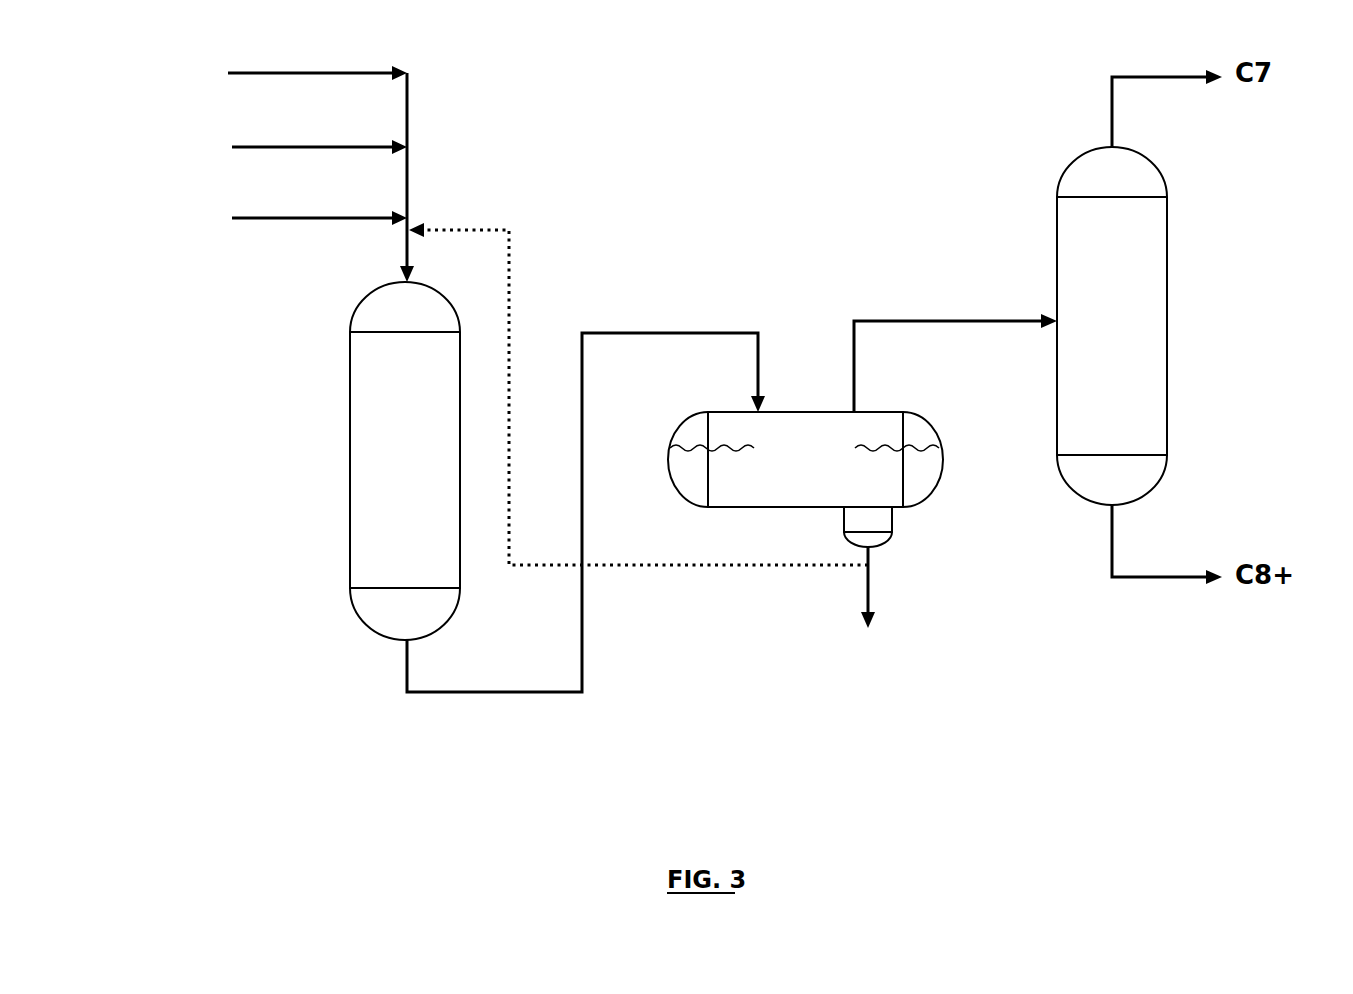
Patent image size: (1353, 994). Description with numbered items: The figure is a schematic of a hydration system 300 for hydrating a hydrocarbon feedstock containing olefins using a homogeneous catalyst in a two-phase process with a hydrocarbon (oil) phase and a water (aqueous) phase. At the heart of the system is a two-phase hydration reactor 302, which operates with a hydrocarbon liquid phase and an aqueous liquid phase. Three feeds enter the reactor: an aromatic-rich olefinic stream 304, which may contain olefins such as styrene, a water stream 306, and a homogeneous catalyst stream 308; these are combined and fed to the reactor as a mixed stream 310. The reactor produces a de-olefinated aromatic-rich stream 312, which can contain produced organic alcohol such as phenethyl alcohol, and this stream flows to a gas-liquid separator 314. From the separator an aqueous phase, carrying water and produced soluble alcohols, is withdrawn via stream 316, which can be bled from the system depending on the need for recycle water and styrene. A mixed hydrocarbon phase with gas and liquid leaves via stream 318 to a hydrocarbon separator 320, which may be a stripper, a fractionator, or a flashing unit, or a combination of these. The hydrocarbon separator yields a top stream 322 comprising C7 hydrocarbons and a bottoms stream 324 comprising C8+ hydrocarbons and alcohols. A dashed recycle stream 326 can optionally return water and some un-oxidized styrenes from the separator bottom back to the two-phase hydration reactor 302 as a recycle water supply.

The hydration system 300 is at (1108, 763).
The two-phase hydration reactor 302 is at (405, 461).
The aromatic-rich olefinic stream 304 is at (291, 73).
The water stream 306 is at (293, 147).
The homogeneous catalyst stream 308 is at (293, 218).
The mixed stream 310 is at (404, 250).
The de-olefinated aromatic-rich stream 312 is at (586, 534).
The gas-liquid separator 314 is at (805, 479).
The aqueous phase stream 316 is at (891, 589).
The mixed hydrocarbon phase stream 318 is at (955, 348).
The hydrocarbon separator 320 is at (1112, 326).
The top stream 322 is at (1167, 98).
The bottoms stream 324 is at (1167, 544).
The recycle stream 326 is at (638, 418).